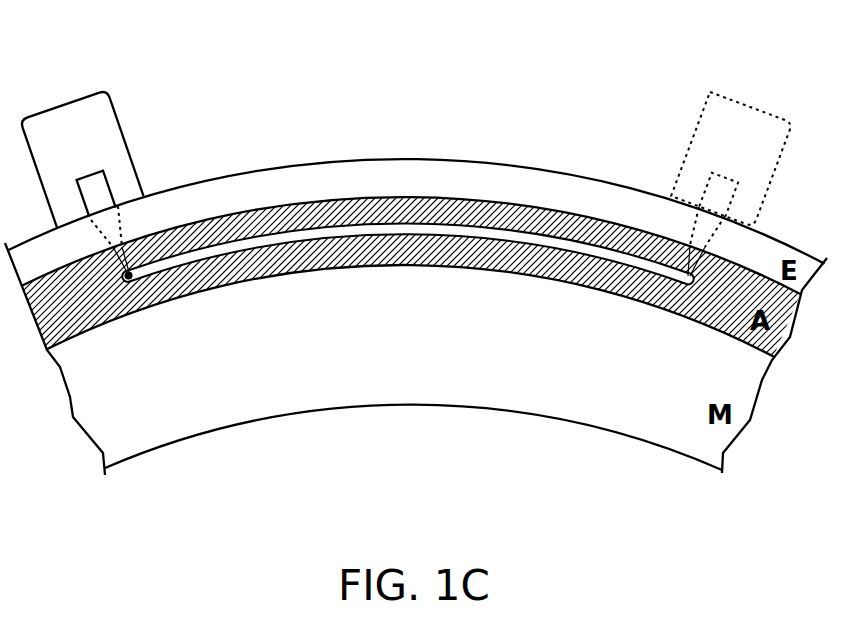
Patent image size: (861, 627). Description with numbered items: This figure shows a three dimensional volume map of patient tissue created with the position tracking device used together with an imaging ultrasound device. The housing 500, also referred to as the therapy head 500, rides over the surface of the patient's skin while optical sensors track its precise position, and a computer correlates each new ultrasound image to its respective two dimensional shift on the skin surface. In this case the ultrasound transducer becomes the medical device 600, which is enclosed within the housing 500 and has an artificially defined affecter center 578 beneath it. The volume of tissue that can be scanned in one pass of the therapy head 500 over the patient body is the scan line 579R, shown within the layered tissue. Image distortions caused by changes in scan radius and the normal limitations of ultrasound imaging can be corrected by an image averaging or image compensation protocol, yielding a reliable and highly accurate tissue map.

The housing 500 is at (65, 97).
The medical device 600 is at (104, 184).
The scan line 579R is at (437, 233).
The affecter center 578 is at (131, 277).